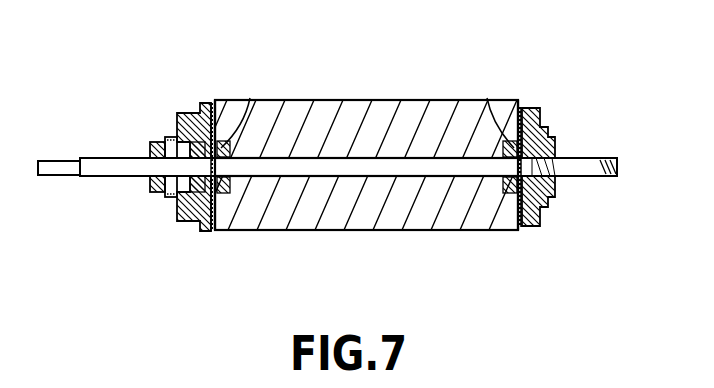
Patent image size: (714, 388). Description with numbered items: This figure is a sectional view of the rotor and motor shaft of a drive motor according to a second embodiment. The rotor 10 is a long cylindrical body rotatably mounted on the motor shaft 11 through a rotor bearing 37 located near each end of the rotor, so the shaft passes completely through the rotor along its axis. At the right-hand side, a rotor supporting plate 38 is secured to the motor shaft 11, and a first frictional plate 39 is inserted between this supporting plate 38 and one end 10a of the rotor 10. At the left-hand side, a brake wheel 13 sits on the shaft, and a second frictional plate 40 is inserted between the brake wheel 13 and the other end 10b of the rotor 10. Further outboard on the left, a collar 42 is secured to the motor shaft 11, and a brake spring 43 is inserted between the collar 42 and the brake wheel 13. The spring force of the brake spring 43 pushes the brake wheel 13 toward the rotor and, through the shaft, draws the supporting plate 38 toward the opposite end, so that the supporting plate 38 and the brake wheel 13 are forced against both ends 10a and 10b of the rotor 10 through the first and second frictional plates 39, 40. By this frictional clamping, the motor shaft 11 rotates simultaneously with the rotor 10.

The rotor 10 is at (390, 98).
The one end of the rotor 10a is at (522, 100).
The other end of the rotor 10b is at (212, 100).
The motor shaft 11 is at (118, 160).
The brake wheel 13 is at (180, 221).
The rotor bearing 37 is at (250, 98).
The rotor supporting plate 38 is at (543, 214).
The first frictional plate 39 is at (520, 231).
The second frictional plate 40 is at (212, 229).
The collar 42 is at (158, 191).
The brake spring 43 is at (168, 206).